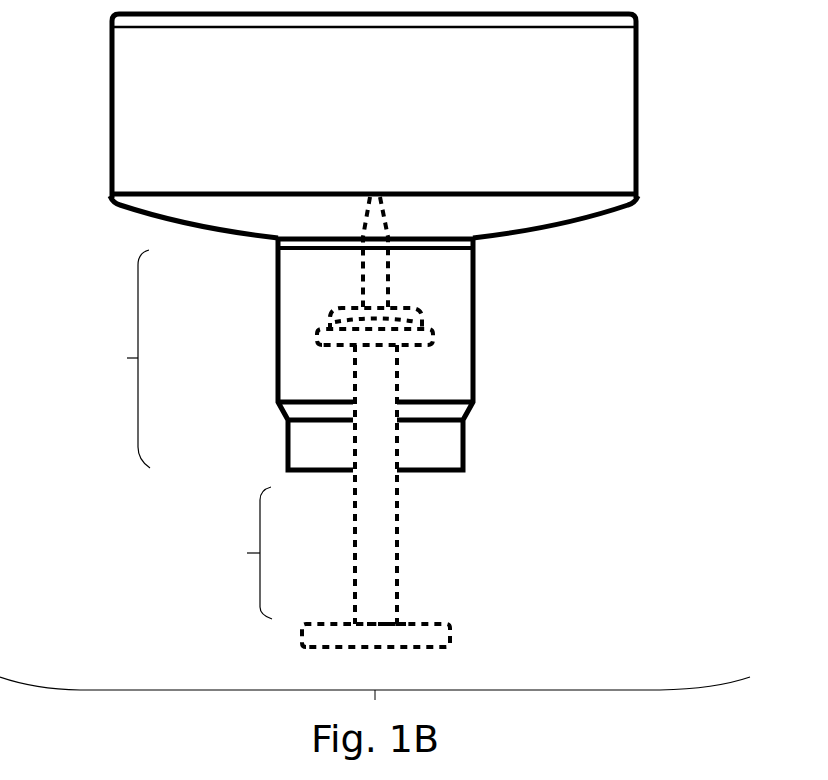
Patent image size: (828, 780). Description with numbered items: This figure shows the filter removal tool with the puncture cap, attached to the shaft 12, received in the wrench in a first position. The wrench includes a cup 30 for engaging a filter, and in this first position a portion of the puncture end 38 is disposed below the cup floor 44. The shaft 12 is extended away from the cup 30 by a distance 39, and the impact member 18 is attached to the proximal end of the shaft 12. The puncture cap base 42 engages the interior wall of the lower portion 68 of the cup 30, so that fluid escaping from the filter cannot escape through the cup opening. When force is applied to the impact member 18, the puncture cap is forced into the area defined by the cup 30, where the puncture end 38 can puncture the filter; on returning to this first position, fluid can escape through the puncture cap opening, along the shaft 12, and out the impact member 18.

The cup 30 is at (640, 90).
The cup floor 44 is at (515, 215).
The lower portion 68 is at (283, 353).
The puncture end 38 is at (386, 218).
The puncture cap base 42 is at (434, 338).
The shaft 12 is at (333, 484).
The distance 39 is at (242, 553).
The impact member 18 is at (452, 631).